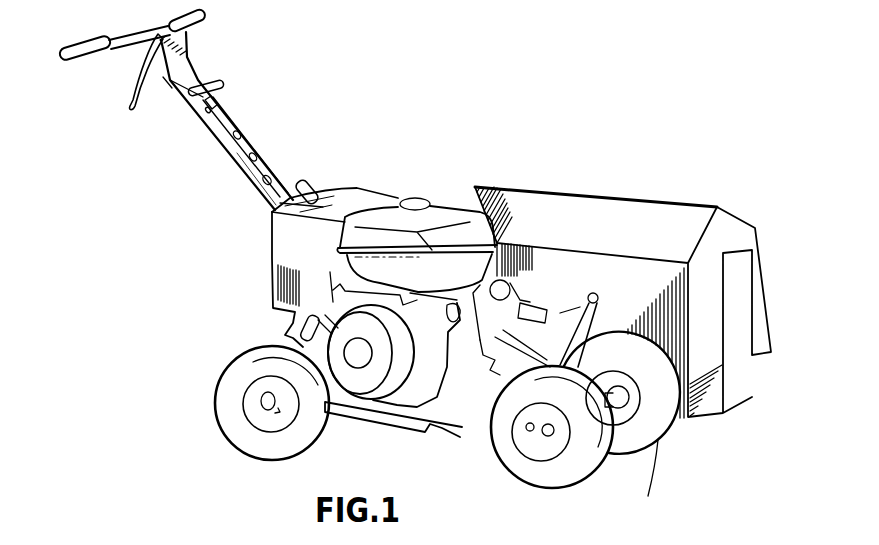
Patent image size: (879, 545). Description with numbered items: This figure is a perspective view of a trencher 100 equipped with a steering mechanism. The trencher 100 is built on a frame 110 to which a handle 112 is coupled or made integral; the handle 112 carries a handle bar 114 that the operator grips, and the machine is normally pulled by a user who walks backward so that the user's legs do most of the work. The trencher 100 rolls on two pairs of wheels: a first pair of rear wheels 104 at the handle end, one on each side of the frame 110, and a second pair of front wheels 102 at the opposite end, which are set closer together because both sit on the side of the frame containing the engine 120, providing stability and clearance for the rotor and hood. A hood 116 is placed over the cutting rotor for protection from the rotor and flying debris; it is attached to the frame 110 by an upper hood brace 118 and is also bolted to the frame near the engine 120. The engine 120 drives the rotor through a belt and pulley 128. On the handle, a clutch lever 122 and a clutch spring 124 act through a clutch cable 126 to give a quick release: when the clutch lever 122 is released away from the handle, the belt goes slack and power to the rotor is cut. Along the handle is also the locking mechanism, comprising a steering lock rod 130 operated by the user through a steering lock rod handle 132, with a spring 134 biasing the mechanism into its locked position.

The trencher 100 is at (437, 126).
The front wheels 102 is at (582, 472).
The rear wheels 104 is at (228, 393).
The frame 110 is at (420, 430).
The handle 112 is at (192, 68).
The handle bar 114 is at (206, 18).
The hood 116 is at (690, 222).
The upper hood brace 118 is at (598, 300).
The engine 120 is at (273, 278).
The clutch lever 122 is at (130, 88).
The clutch spring 124 is at (163, 77).
The clutch cable 126 is at (237, 153).
The pulley 128 is at (502, 278).
The steering lock rod 130 is at (242, 113).
The steering lock rod handle 132 is at (224, 88).
The spring 134 is at (222, 102).